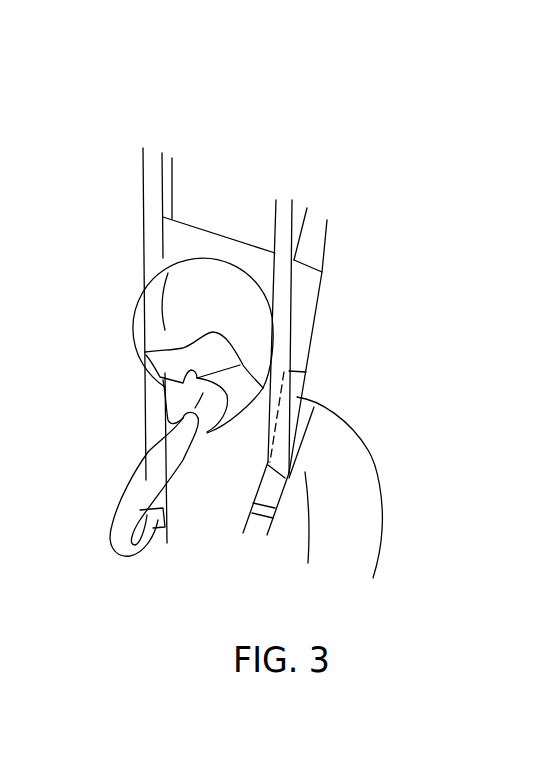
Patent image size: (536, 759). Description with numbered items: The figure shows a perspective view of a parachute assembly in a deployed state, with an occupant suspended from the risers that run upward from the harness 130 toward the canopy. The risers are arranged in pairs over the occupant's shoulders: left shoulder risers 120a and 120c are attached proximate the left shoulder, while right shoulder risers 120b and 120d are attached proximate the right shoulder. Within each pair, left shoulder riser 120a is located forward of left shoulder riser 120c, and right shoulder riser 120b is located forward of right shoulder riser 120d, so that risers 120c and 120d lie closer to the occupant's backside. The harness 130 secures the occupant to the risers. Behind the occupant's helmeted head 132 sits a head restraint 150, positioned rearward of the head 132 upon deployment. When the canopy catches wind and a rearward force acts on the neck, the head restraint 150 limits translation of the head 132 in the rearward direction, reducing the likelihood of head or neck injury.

The left shoulder riser 120a is at (280, 425).
The right shoulder riser 120b is at (143, 253).
The left shoulder riser 120c is at (302, 233).
The right shoulder riser 120d is at (168, 180).
The harness 130 is at (217, 523).
The head 132 is at (203, 311).
The head restraint 150 is at (318, 302).